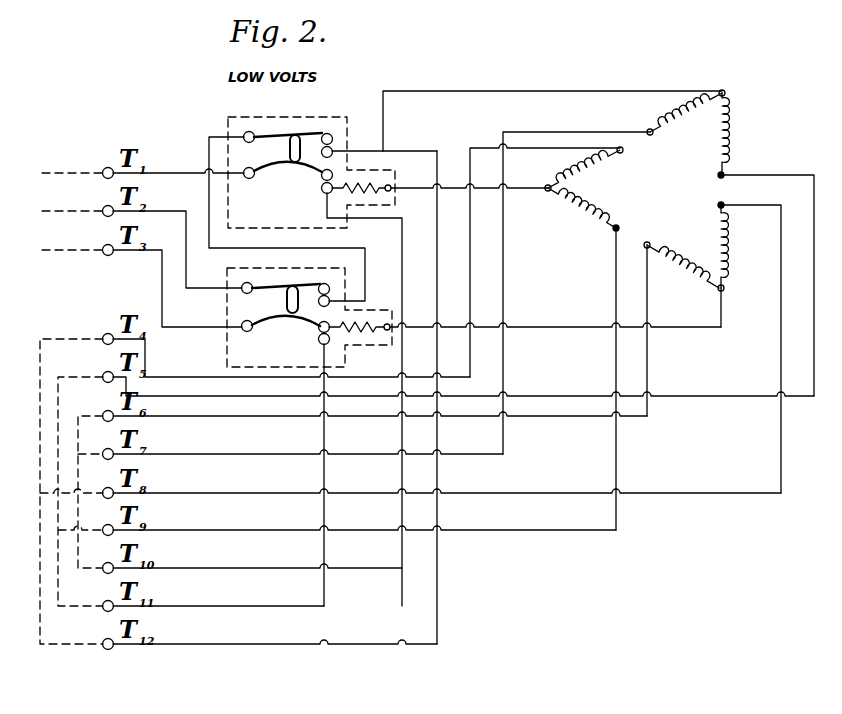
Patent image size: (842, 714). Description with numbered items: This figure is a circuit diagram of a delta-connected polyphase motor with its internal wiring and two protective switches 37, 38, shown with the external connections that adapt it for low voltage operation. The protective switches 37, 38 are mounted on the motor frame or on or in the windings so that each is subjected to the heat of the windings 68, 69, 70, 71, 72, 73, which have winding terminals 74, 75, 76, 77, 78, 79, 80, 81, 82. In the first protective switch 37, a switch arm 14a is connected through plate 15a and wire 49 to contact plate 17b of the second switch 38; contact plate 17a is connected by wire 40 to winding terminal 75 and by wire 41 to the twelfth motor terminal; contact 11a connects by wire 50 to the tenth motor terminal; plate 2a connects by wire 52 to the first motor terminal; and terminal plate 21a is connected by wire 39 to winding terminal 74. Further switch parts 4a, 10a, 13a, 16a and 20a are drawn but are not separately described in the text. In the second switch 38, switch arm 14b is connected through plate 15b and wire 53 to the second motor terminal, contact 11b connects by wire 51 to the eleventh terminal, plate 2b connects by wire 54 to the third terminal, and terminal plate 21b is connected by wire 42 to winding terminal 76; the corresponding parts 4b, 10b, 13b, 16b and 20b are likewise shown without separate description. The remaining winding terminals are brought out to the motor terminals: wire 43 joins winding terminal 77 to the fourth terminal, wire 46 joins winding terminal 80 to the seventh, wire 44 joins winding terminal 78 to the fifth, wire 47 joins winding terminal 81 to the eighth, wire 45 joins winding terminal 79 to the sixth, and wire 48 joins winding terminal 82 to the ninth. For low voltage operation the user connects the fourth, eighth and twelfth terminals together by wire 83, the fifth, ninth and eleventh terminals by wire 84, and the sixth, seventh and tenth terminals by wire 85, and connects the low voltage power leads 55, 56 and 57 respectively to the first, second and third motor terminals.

The plate 2a is at (248, 178).
The movable contact bar 4a is at (264, 163).
The relay contact 10a is at (321, 175).
The contact 11a is at (322, 188).
The relay coil/armature 13a is at (290, 151).
The switch arm 14a is at (298, 133).
The plate 15a is at (249, 131).
The relay contact 16a is at (333, 137).
The contact plate 17a is at (335, 153).
The resistor 20a is at (388, 190).
The terminal plate 21a is at (391, 186).
The plate 2b is at (246, 330).
The movable contact bar 4b is at (262, 314).
The relay contact 10b is at (318, 327).
The contact 11b is at (319, 342).
The relay coil/armature 13b is at (287, 301).
The switch arm 14b is at (274, 286).
The plate 15b is at (241, 288).
The relay contact 16b is at (330, 289).
The contact plate 17b is at (330, 300).
The resistor 20b is at (361, 331).
The terminal plate 21b is at (391, 324).
The protective switch 37 is at (216, 124).
The protective switch 38 is at (218, 357).
The wire 39 is at (528, 188).
The wire 40 is at (556, 91).
The wire 41 is at (438, 244).
The wire 42 is at (572, 326).
The wire 43 is at (471, 255).
The wire 44 is at (805, 175).
The wire 45 is at (647, 362).
The wire 46 is at (504, 264).
The wire 47 is at (781, 362).
The wire 48 is at (616, 362).
The wire 49 is at (303, 248).
The wire 50 is at (402, 245).
The wire 51 is at (324, 431).
The wire 52 is at (162, 172).
The wire 53 is at (162, 210).
The wire 54 is at (152, 250).
The low voltage power lead 55 is at (79, 166).
The low voltage power lead 56 is at (79, 204).
The low voltage power lead 57 is at (79, 243).
The winding 68 is at (594, 172).
The winding 69 is at (688, 116).
The winding 70 is at (716, 149).
The winding 71 is at (715, 235).
The winding 72 is at (688, 265).
The winding 73 is at (596, 205).
The winding terminal 74 is at (548, 190).
The winding terminal 75 is at (725, 93).
The winding terminal 76 is at (724, 289).
The winding terminal 77 is at (623, 150).
The winding terminal 78 is at (719, 175).
The winding terminal 79 is at (648, 244).
The winding terminal 80 is at (653, 132).
The winding terminal 81 is at (719, 205).
The winding terminal 82 is at (618, 228).
The wire 83 is at (80, 332).
The wire 84 is at (80, 370).
The wire 85 is at (89, 406).